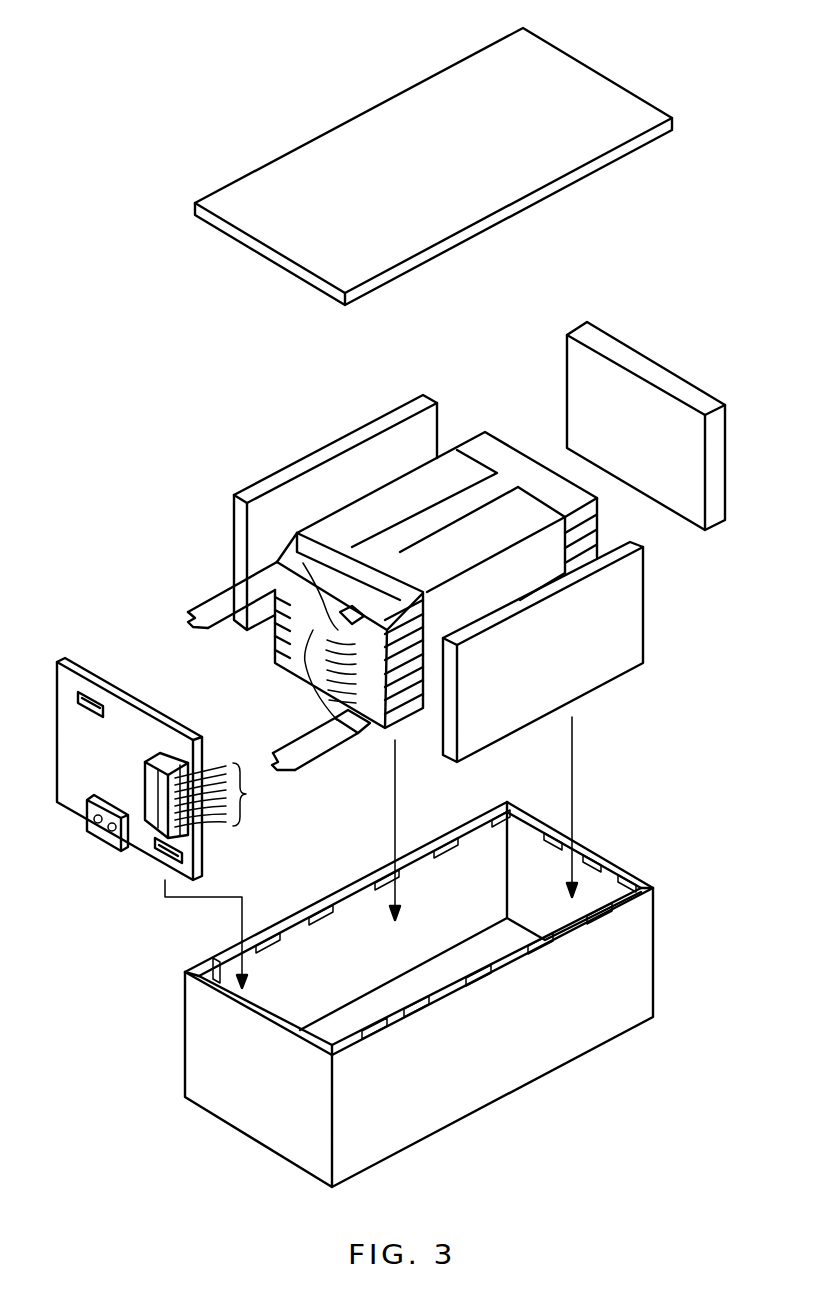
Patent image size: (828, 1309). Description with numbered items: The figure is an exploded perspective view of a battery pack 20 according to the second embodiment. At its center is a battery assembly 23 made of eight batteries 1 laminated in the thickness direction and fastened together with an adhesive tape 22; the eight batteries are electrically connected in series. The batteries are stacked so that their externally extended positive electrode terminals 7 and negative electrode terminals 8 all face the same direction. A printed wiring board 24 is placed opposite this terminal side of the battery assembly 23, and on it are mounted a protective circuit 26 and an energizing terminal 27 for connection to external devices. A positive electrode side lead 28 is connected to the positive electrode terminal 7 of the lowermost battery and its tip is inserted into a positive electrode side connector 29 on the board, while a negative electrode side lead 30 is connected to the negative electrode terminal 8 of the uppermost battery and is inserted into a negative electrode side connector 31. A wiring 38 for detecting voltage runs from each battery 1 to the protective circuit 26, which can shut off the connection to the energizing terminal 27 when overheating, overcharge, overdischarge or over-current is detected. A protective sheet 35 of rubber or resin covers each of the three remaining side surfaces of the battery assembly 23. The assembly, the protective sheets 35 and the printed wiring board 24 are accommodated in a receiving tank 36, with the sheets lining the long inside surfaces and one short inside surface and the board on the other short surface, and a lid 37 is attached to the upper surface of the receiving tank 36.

The battery pack 20 is at (212, 67).
The lid 37 is at (612, 103).
The protective sheet 35 is at (298, 472).
The battery assembly 23 is at (380, 493).
The adhesive tape 22 is at (508, 517).
The battery 1 is at (627, 546).
The negative electrode terminal 8 is at (275, 560).
The negative electrode side lead 30 is at (195, 612).
The positive electrode terminal 7 is at (357, 617).
The positive electrode side lead 28 is at (315, 750).
The wiring 38 is at (303, 663).
The printed wiring board 24 is at (93, 666).
The negative electrode side connector 31 is at (100, 703).
The protective circuit 26 is at (158, 760).
The energizing terminal 27 is at (112, 838).
The positive electrode side connector 29 is at (182, 860).
The receiving tank 36 is at (640, 960).